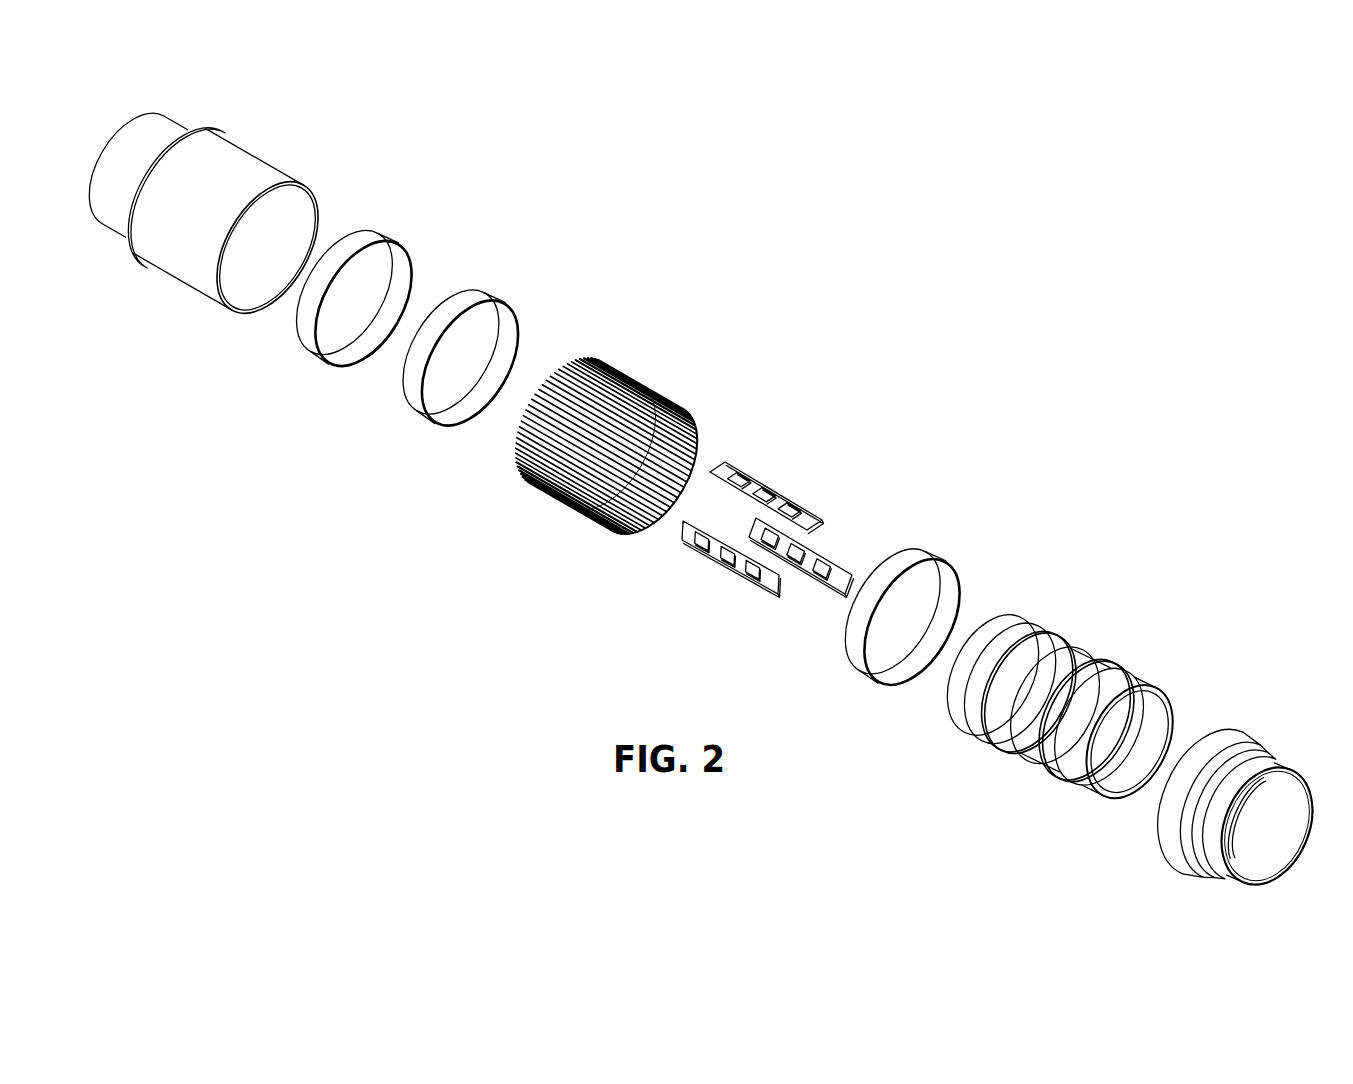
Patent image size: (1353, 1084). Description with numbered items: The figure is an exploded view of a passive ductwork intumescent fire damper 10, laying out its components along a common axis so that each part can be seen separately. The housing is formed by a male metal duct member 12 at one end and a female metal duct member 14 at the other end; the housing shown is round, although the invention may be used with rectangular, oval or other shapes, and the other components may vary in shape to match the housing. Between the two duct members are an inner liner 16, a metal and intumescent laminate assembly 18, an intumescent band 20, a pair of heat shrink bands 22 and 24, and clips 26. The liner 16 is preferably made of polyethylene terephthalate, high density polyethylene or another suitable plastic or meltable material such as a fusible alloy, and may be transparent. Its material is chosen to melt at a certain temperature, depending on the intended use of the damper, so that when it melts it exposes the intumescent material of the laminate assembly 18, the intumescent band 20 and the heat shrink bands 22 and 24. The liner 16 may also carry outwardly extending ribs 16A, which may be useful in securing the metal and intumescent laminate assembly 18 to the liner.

The fire damper 10 is at (784, 380).
The male metal duct member 12 is at (250, 165).
The female metal duct member 14 is at (1222, 742).
The inner liner 16 is at (1059, 704).
The outwardly extending ribs 16A is at (1058, 652).
The metal and intumescent laminate assembly 18 is at (637, 402).
The intumescent band 20 is at (368, 241).
The heat shrink band 22 is at (472, 298).
The heat shrink band 24 is at (923, 557).
The clips 26 is at (778, 500).